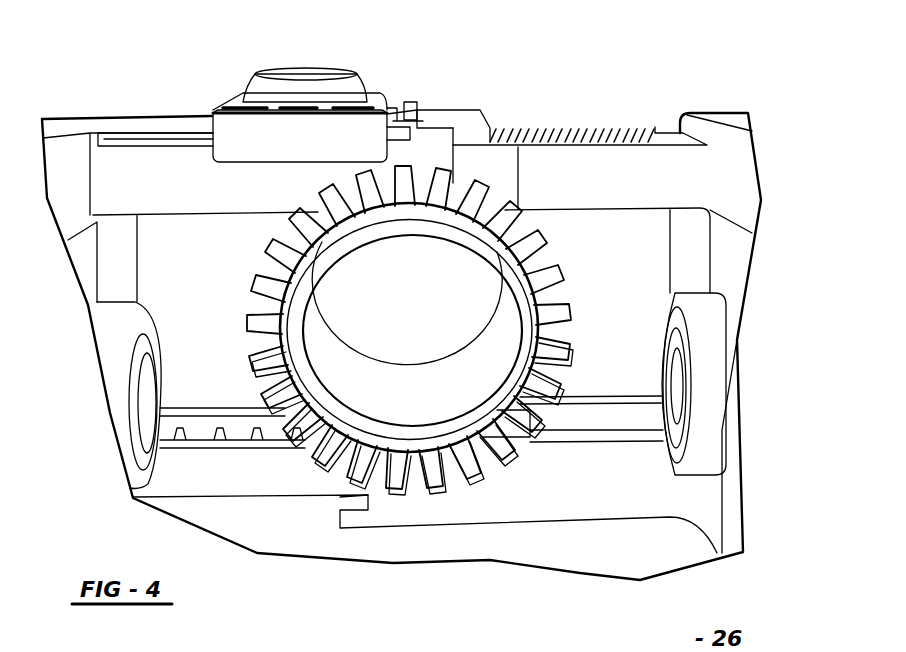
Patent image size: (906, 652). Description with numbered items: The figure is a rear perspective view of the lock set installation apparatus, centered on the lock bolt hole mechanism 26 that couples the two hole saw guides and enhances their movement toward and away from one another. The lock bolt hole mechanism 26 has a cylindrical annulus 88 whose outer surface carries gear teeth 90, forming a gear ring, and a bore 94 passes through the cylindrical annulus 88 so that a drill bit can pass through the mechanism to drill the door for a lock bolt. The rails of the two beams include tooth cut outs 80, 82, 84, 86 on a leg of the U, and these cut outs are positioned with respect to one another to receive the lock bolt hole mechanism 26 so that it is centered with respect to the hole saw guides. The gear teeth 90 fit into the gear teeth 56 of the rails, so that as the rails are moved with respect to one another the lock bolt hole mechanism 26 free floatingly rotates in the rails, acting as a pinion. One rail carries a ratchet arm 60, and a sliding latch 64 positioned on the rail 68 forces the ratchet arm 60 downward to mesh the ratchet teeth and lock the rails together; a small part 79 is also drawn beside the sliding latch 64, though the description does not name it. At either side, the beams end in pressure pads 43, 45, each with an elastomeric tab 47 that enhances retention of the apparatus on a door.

The lock bolt hole mechanism 26 is at (572, 277).
The pressure pad 43 is at (715, 333).
The pressure pad 45 is at (112, 318).
The elastomeric tab 47 is at (147, 398).
The gear teeth 56 is at (200, 440).
The ratchet arm 60 is at (424, 103).
The sliding latch 64 is at (302, 88).
The rail 68 is at (172, 146).
The bracket 79 is at (408, 102).
The tooth cut out 80 is at (513, 185).
The tooth cut out 82 is at (440, 486).
The tooth cut out 84 is at (392, 183).
The tooth cut out 86 is at (340, 457).
The cylindrical annulus 88 is at (550, 328).
The gear teeth 90 is at (548, 368).
The bore 94 is at (480, 408).